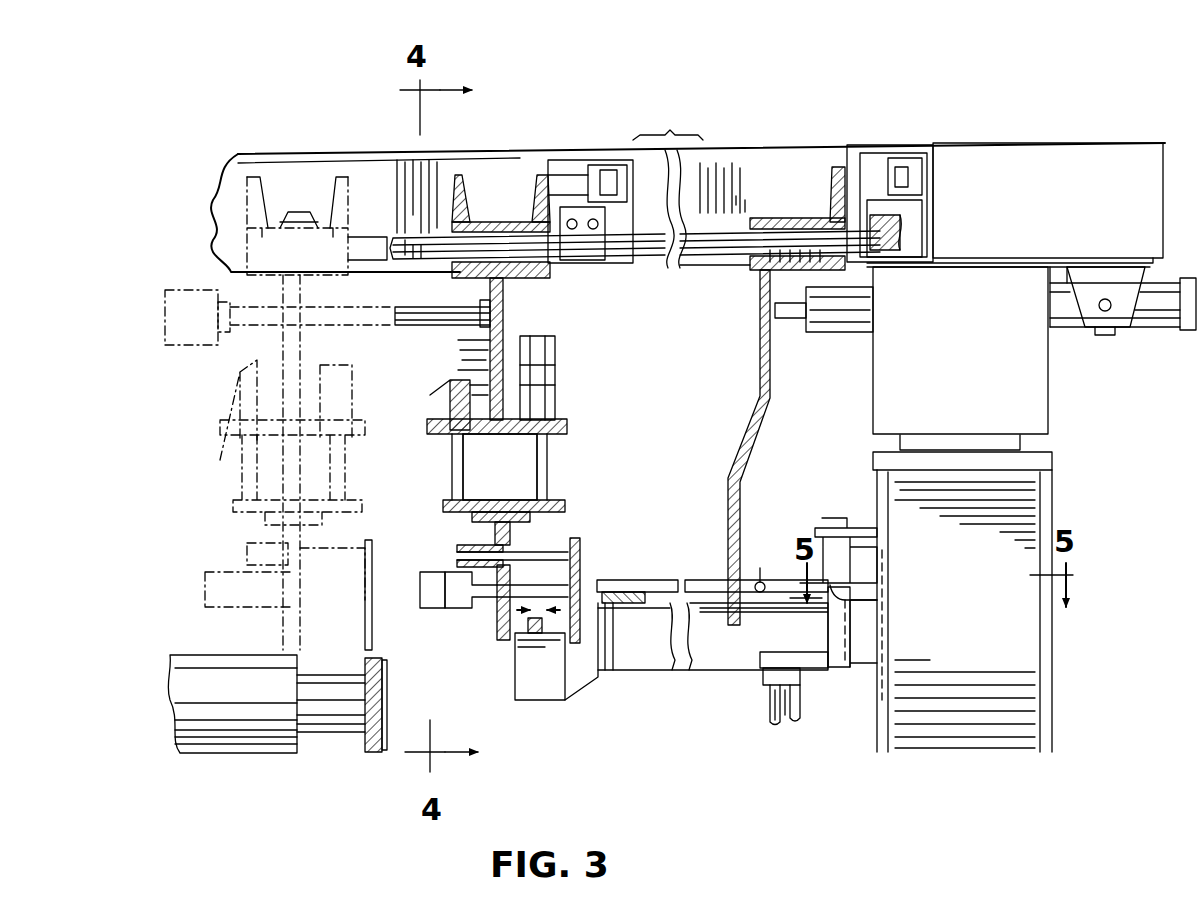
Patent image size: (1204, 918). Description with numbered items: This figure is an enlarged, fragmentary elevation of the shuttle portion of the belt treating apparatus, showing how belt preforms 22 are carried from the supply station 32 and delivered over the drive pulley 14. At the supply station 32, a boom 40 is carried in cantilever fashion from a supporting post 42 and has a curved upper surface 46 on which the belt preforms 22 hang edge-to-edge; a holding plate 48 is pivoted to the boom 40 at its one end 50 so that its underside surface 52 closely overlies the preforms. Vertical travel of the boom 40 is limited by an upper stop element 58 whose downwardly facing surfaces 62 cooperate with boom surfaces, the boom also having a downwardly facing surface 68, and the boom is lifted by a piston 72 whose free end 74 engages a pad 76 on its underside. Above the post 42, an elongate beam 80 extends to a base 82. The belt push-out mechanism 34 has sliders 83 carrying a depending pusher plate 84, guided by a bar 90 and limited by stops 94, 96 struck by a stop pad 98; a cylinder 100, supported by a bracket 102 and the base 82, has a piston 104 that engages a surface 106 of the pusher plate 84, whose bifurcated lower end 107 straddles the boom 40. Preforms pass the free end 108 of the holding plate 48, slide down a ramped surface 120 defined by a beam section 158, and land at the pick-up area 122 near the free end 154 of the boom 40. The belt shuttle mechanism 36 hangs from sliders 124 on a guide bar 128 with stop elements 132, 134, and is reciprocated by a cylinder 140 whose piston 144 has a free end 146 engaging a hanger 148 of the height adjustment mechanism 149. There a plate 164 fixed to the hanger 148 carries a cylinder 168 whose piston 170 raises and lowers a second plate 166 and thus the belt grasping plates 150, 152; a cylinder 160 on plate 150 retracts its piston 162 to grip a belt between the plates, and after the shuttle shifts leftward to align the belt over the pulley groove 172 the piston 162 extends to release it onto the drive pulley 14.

The drive pulley 14 is at (335, 740).
The belt preform 22 is at (624, 606).
The supply station 32 is at (1080, 658).
The belt push-out mechanism 34 is at (830, 398).
The belt shuttle mechanism 36 is at (585, 400).
The boom 40 is at (724, 628).
The supporting post 42 is at (964, 611).
The curved upper surface 46 is at (628, 598).
The holding plate 48 is at (672, 590).
The one end 50 is at (761, 568).
The underside surface 52 is at (680, 618).
The upper stop element 58 is at (831, 548).
The downwardly facing surfaces 62 is at (877, 603).
The downwardly facing surface 68 is at (850, 667).
The reciprocating piston 72 is at (785, 712).
The free end 74 is at (782, 677).
The pad 76 is at (783, 658).
The elongate beam 80 is at (703, 165).
The base 82 is at (1015, 306).
The sliders 83 is at (790, 175).
The pusher plate 84 is at (760, 445).
The bar 90 is at (740, 190).
The stop 94 is at (870, 180).
The stop 96 is at (605, 180).
The stop pad 98 is at (840, 165).
The cylinder 100 is at (1152, 325).
The bracket 102 is at (1097, 301).
The reciprocating piston 104 is at (790, 318).
The surface 106 is at (760, 402).
The bifurcated lower end 107 is at (727, 612).
The free end 108 is at (605, 598).
The ramped surface 120 is at (575, 680).
The pick-up area 122 is at (545, 698).
The sliders 124 is at (455, 275).
The guide bar 128 is at (380, 240).
The stop element 132 is at (478, 175).
The stop element 134 is at (548, 175).
The cylinder 140 is at (178, 330).
The piston 144 is at (262, 295).
The free end 146 is at (503, 312).
The hanger 148 is at (490, 328).
The height adjustment mechanism 149 is at (560, 450).
The belt grasping plate 150 is at (285, 612).
The belt grasping plate 152 is at (578, 560).
The free end 154 is at (510, 690).
The beam section 158 is at (575, 700).
The cylinder 160 is at (463, 605).
The reciprocating piston 162 is at (538, 583).
The plate 164 is at (495, 437).
The second plate 166 is at (557, 455).
The cylinder 168 is at (565, 340).
The piston 170 is at (501, 467).
The pulley groove 172 is at (385, 668).